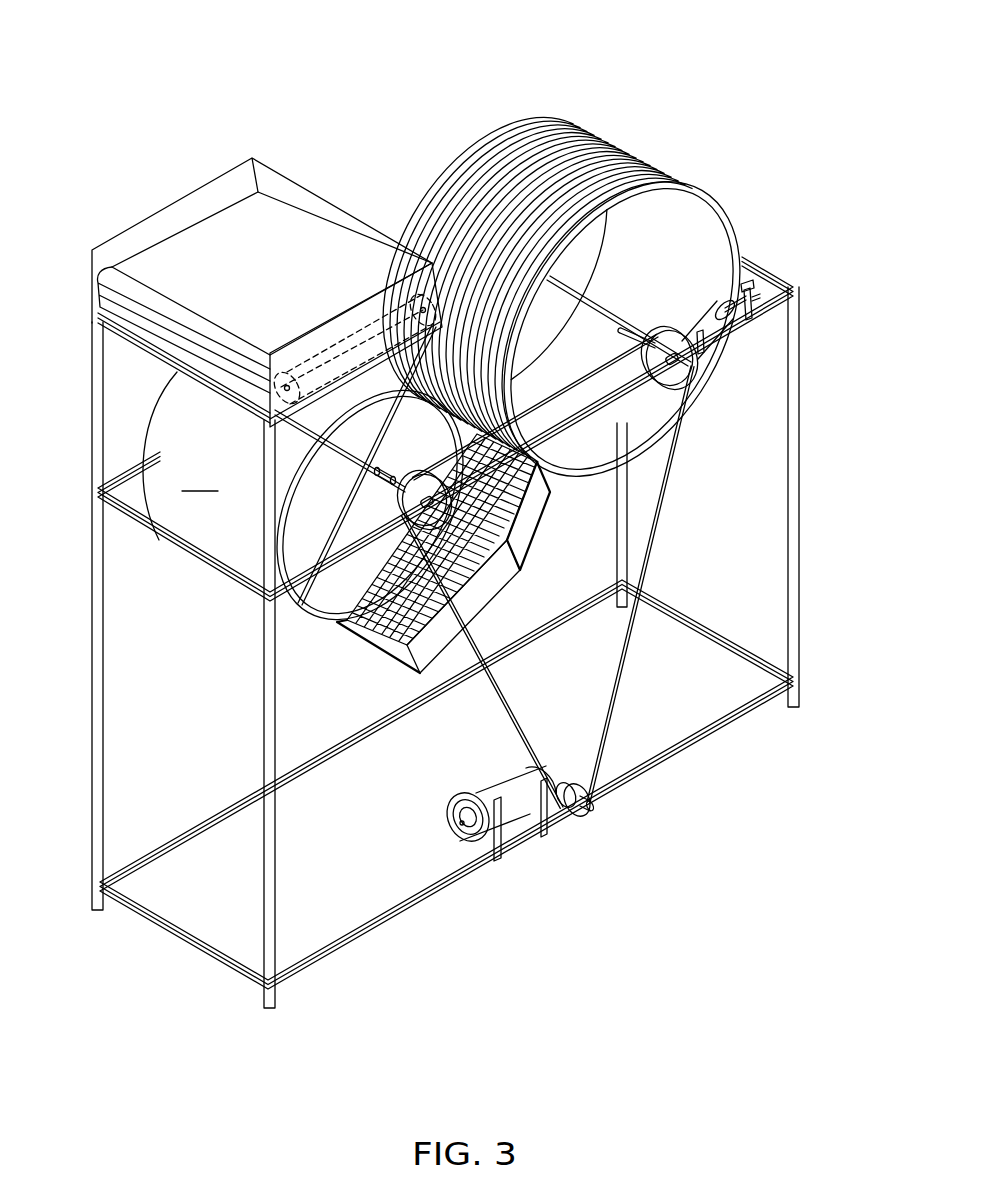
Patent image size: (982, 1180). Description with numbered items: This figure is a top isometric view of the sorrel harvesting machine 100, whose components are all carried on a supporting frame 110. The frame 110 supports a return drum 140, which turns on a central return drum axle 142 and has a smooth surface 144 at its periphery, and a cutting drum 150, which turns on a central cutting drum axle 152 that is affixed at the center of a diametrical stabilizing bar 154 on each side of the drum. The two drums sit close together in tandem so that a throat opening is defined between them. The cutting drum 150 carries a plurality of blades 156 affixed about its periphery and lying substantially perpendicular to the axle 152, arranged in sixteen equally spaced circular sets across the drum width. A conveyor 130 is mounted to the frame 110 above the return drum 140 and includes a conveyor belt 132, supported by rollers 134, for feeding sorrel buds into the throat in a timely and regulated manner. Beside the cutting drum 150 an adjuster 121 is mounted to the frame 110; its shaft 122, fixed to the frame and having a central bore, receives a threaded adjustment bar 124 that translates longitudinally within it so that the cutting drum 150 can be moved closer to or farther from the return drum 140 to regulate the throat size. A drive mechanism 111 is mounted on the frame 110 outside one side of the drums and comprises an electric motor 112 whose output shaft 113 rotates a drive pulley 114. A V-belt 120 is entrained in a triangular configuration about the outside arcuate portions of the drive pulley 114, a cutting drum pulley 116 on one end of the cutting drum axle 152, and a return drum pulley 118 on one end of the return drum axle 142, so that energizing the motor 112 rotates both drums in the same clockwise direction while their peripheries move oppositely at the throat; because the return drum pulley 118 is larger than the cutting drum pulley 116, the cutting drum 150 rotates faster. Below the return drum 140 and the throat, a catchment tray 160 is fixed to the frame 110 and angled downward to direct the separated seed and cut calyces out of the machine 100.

The sorrel harvesting machine 100 is at (715, 66).
The supporting frame 110 is at (93, 715).
The drive mechanism 111 is at (513, 813).
The electric motor 112 is at (470, 790).
The output shaft 113 is at (595, 805).
The drive pulley 114 is at (585, 815).
The cutting drum pulley 116 is at (672, 388).
The return drum pulley 118 is at (430, 530).
The V-belt 120 is at (625, 660).
The adjuster 121 is at (768, 294).
The shaft 122 is at (705, 330).
The threaded adjustment bar 124 is at (748, 318).
The conveyor 130 is at (267, 268).
The conveyor belt 132 is at (243, 217).
The conveyor rollers 134 is at (305, 372).
The return drum 140 is at (265, 505).
The central return drum axle 142 is at (378, 478).
The smooth surface 144 is at (200, 480).
The cutting drum 150 is at (600, 292).
The central cutting drum axle 152 is at (627, 337).
The diametrical stabilizing bar 154 is at (607, 313).
The blades 156 is at (612, 122).
The catchment tray 160 is at (365, 650).